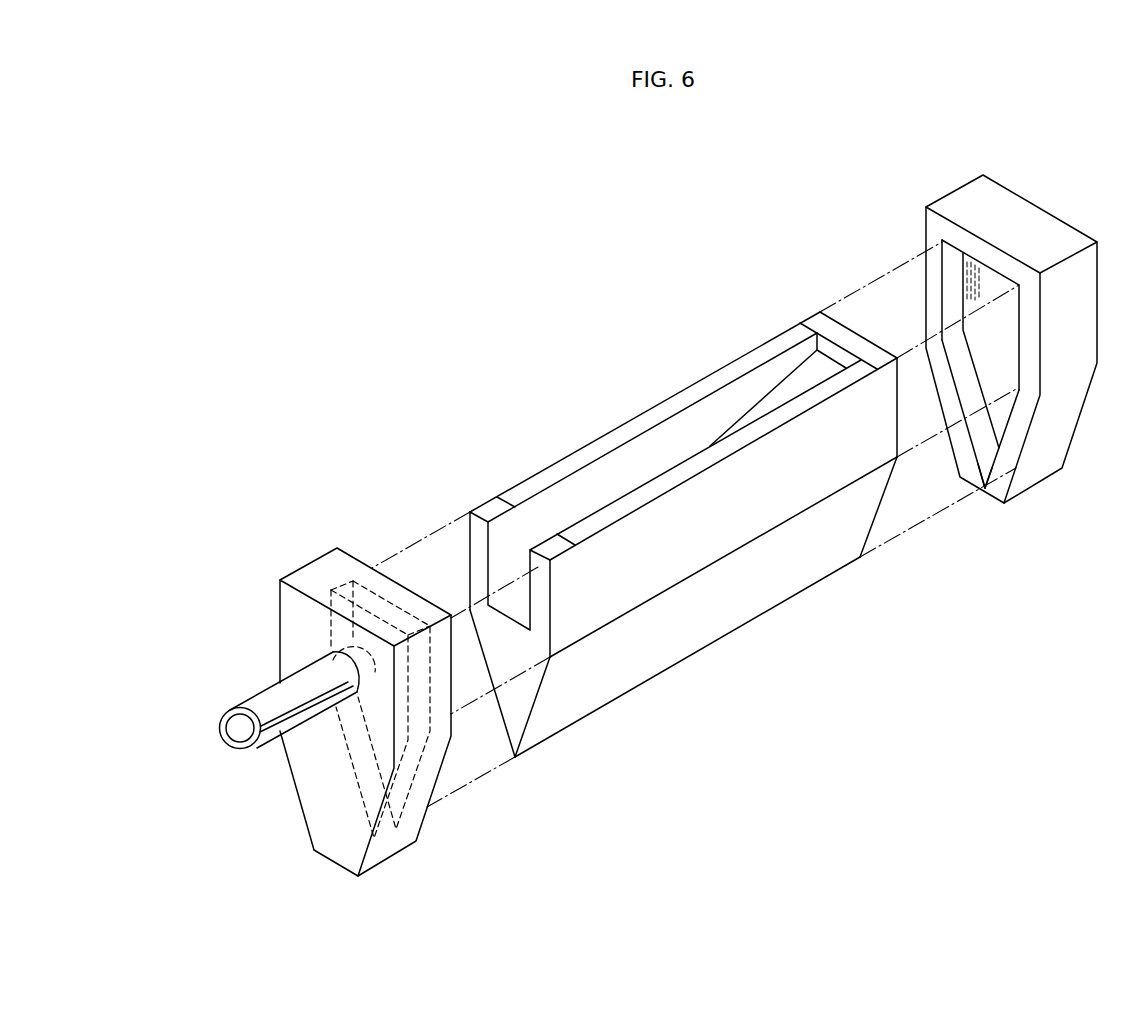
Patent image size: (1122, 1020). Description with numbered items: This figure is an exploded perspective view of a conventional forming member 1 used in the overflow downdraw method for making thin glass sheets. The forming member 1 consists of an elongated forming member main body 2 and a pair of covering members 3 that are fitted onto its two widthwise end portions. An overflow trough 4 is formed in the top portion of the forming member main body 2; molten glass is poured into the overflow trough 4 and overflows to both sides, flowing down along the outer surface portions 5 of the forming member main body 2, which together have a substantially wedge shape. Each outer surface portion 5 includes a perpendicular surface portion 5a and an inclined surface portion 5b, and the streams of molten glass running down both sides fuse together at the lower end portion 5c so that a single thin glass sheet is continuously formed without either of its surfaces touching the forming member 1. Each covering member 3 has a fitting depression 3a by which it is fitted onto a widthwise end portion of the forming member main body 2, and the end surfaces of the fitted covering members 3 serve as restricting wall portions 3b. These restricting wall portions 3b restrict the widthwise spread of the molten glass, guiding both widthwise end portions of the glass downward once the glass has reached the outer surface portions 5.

The forming member 1 is at (617, 379).
The forming member main body 2 is at (556, 452).
The covering member 3 is at (1015, 230).
The fitting depression 3a is at (997, 372).
The restricting wall portion 3b is at (945, 378).
The overflow trough 4 is at (782, 393).
The outer surface portion 5 is at (739, 504).
The perpendicular surface portion 5a is at (670, 552).
The inclined surface portion 5b is at (627, 657).
The lower end portion 5c is at (555, 735).